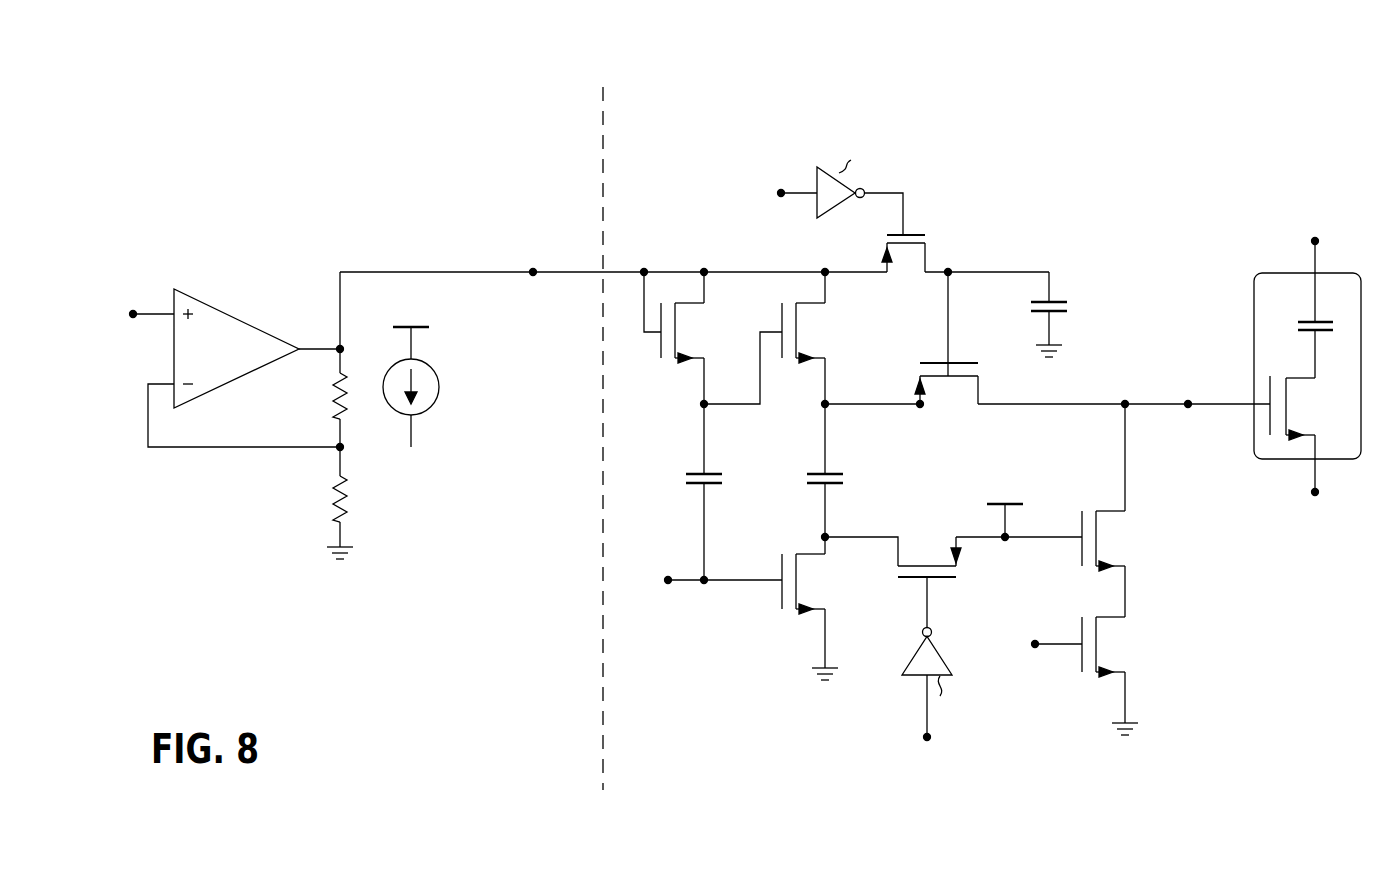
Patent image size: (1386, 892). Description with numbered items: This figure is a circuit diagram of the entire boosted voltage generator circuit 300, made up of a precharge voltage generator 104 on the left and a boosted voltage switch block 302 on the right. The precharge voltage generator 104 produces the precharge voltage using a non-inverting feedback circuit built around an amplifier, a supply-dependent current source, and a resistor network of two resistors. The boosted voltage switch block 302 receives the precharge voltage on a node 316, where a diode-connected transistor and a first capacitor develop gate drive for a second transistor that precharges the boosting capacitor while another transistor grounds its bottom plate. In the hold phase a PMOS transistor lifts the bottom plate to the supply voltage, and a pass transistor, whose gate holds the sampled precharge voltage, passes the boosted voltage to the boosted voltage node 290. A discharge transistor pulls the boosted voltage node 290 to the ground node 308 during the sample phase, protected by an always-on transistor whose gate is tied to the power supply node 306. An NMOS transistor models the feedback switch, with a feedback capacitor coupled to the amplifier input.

The boosted voltage generator circuit 300 is at (1170, 60).
The precharge voltage generator 104 is at (507, 139).
The boosted voltage switch block 302 is at (650, 139).
The precharge voltage node 316 is at (533, 278).
The boosted voltage node 290 is at (1188, 409).
The power supply VDD node 306 is at (1017, 508).
The ground node 308 is at (1133, 721).